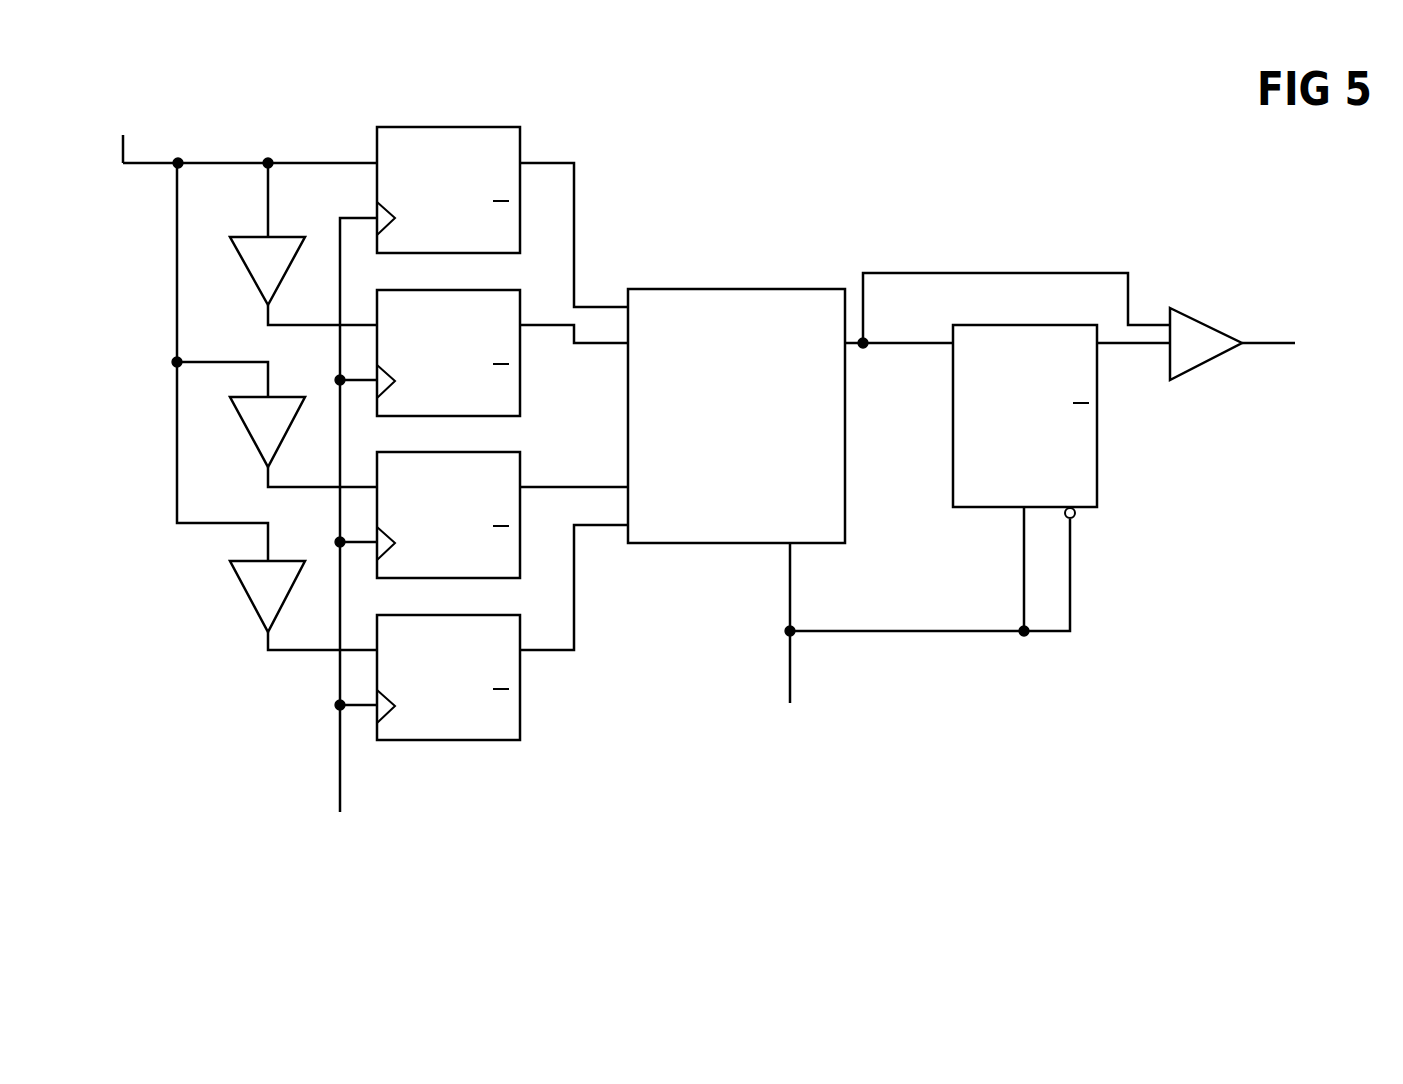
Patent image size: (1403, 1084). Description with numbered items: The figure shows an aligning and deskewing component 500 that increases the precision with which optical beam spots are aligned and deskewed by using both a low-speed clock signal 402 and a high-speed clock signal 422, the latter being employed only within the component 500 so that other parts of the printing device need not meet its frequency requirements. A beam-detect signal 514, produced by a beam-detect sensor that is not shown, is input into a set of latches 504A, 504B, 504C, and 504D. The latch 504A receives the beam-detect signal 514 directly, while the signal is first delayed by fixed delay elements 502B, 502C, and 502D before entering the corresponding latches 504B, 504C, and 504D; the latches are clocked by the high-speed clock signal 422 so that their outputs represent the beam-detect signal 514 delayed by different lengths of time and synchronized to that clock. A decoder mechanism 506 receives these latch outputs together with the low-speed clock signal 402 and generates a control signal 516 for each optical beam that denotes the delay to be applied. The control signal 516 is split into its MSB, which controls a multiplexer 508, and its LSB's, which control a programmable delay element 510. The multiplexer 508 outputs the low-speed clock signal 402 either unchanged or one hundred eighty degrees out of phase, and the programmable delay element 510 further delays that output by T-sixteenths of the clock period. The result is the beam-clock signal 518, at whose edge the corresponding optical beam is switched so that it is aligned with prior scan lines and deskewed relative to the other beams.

The aligning and deskewing component 500 is at (1258, 770).
The beam-detect signal 514 is at (125, 153).
The fixed delay element 502B is at (262, 300).
The fixed delay element 502C is at (262, 462).
The fixed delay element 502D is at (262, 616).
The latch 504A is at (476, 202).
The latch 504B is at (476, 365).
The latch 504C is at (476, 527).
The latch 504D is at (476, 690).
The decoder mechanism 506 is at (757, 456).
The multiplexer 508 is at (1045, 441).
The programmable delay element 510 is at (1190, 365).
The control signal 516 is at (864, 349).
The beam-clock signal 518 is at (1258, 340).
The low-speed clock signal 402 is at (872, 733).
The high-speed clock signal 422 is at (262, 838).